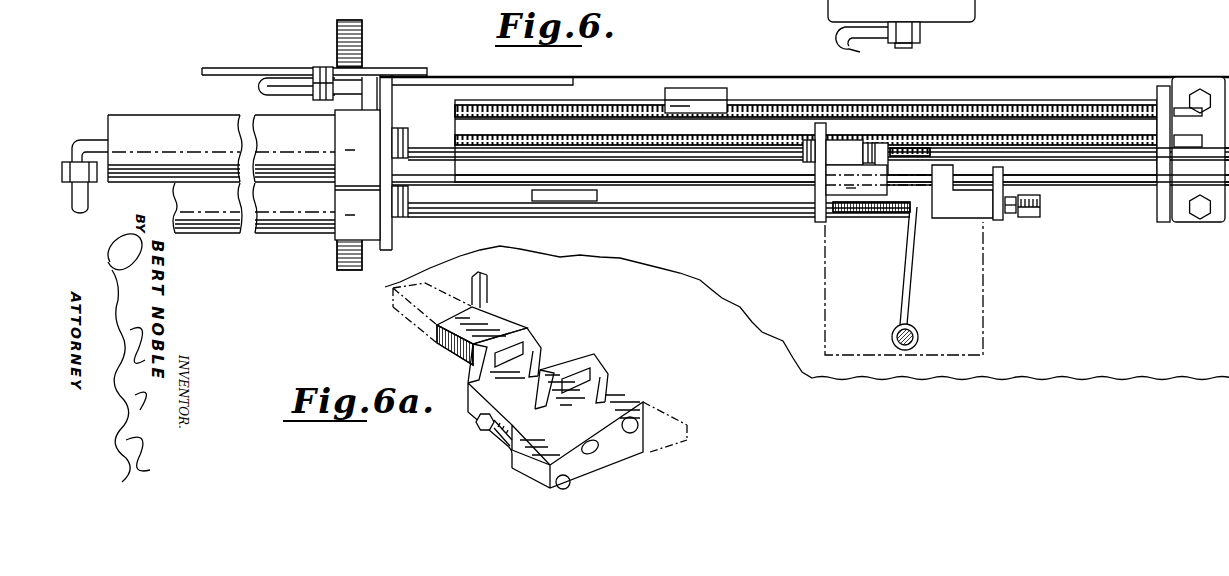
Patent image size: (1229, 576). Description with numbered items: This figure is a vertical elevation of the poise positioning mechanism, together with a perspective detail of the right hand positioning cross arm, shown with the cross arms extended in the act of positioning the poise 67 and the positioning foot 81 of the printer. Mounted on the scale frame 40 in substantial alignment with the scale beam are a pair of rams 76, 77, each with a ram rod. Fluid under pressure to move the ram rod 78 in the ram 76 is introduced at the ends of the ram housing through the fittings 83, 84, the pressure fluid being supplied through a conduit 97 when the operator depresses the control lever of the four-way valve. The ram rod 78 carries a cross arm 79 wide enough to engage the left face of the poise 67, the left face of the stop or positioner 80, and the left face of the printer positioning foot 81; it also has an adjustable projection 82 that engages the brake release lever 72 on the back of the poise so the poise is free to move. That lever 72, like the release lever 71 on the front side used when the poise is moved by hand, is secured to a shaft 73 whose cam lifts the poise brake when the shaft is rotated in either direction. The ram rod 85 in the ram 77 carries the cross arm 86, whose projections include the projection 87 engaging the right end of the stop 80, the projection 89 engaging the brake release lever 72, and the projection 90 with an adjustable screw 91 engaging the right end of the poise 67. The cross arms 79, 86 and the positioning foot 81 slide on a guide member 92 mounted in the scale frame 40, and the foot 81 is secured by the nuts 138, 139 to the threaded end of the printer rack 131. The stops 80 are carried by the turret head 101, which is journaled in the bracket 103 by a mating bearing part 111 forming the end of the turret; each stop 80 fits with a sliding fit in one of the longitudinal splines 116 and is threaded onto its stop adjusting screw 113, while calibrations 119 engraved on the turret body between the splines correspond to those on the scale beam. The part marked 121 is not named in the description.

In FIG. 6, the scale frame 40 is at (452, 78).
In FIG. 6, the gear 121 is at (337, 34).
In FIG. 6, the fitting 84 is at (357, 82).
In FIG. 6, the ram 76 is at (270, 117).
In FIG. 6, the fitting 83 is at (80, 138).
In FIG. 6, the conduit 97 is at (93, 196).
In FIG. 6, the ram 77 is at (266, 224).
In FIG. 6, the ram rod 78 is at (434, 150).
In FIG. 6, the turret head 101 is at (985, 108).
In FIG. 6, the longitudinal splines 116 is at (610, 128).
In FIG. 6, the stop adjusting screws 113 is at (752, 140).
In FIG. 6, the calibrations 119 is at (1053, 127).
In FIG. 6, the rack 131 is at (1120, 155).
In FIG. 6, the guide member 92 is at (433, 182).
In FIG. 6A, the guide member 92 is at (672, 418).
In FIG. 6, the ram rod 85 is at (477, 208).
In FIG. 6, the stop 80 is at (712, 92).
In FIG. 6, the bracket 103 is at (1178, 86).
In FIG. 6, the bearing part 111 is at (1167, 216).
In FIG. 6, the cross arm 79 is at (817, 175).
In FIG. 6, the nut 138 is at (840, 152).
In FIG. 6, the projection 87 is at (888, 140).
In FIG. 6A, the projection 87 is at (488, 286).
In FIG. 6, the printer positioning foot 81 is at (856, 180).
In FIG. 6, the nut 139 is at (866, 189).
In FIG. 6, the cross arm 86 is at (905, 185).
In FIG. 6A, the cross arm 86 is at (480, 407).
In FIG. 6, the projection 89 is at (919, 212).
In FIG. 6A, the projection 89 is at (470, 382).
In FIG. 6, the adjustable screw 91 is at (1005, 214).
In FIG. 6A, the adjustable screw 91 is at (502, 438).
In FIG. 6, the projection 90 is at (1027, 218).
In FIG. 6A, the projection 90 is at (550, 477).
In FIG. 6, the adjustable projection 82 is at (843, 215).
In FIG. 6, the release lever 72 is at (902, 283).
In FIG. 6, the poise 67 is at (821, 253).
In FIG. 6, the release lever 71 is at (853, 44).
In FIG. 6, the shaft 73 is at (905, 46).